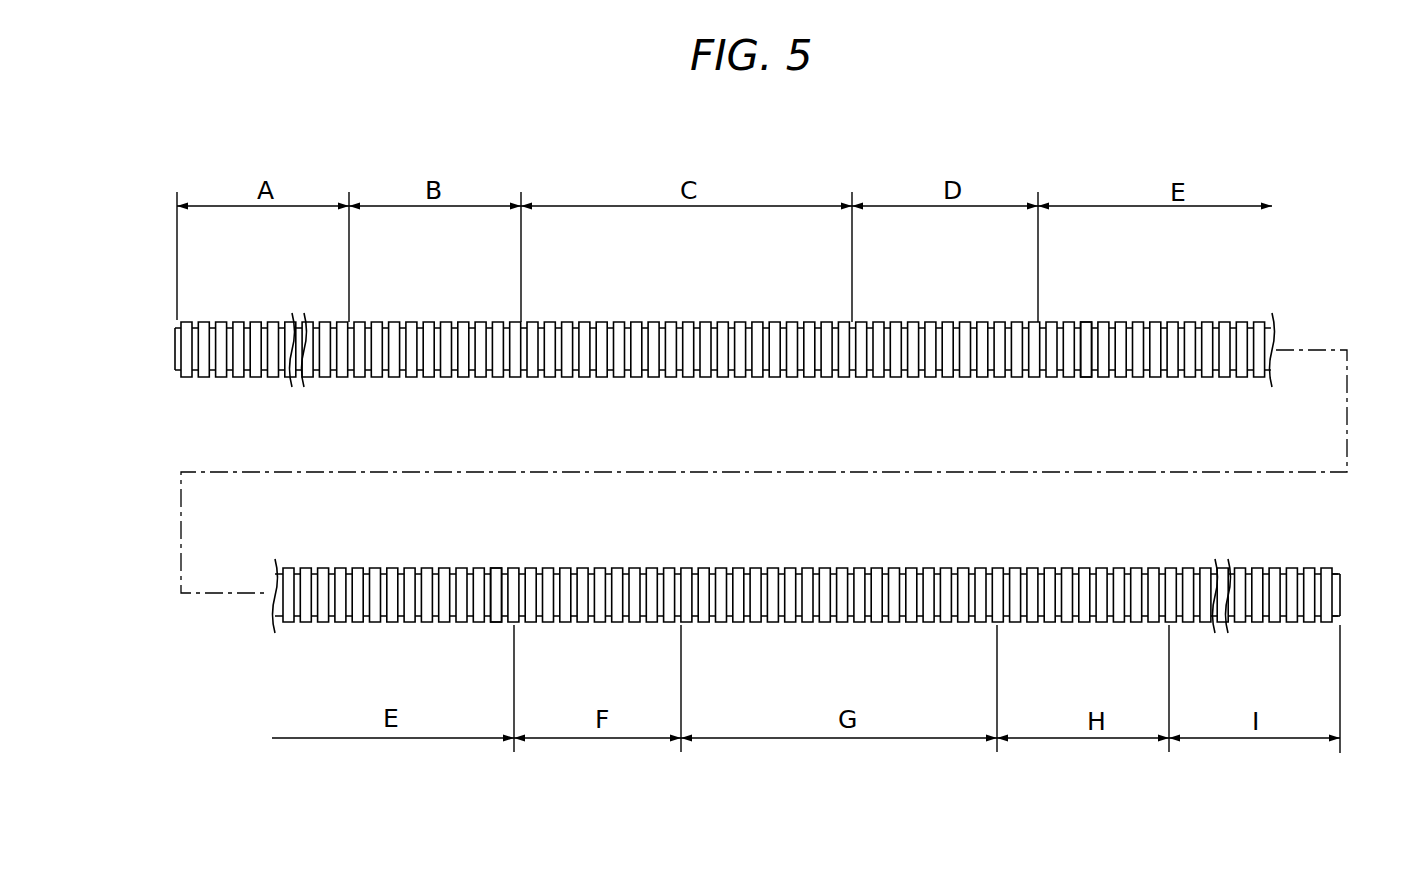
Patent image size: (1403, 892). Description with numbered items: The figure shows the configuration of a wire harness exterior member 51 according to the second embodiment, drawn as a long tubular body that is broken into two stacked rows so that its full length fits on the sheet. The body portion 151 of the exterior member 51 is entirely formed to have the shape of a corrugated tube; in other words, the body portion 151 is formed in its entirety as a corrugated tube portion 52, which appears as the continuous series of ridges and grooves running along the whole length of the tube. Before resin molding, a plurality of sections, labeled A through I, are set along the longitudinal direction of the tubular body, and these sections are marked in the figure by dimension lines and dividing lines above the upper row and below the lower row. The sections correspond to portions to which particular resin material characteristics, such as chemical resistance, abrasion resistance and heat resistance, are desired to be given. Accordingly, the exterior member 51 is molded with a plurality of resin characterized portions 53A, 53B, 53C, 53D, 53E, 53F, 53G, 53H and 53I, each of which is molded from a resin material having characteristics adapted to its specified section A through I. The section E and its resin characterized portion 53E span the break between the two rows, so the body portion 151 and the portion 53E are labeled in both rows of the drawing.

The exterior member 51 is at (1293, 298).
The corrugated tube portion 52 is at (676, 378).
The resin characterized portion 53A is at (277, 320).
The resin characterized portion 53B is at (447, 320).
The resin characterized portion 53C is at (705, 320).
The resin characterized portion 53D is at (963, 320).
The resin characterized portion 53E is at (1228, 320).
The resin characterized portion 53F is at (565, 624).
The resin characterized portion 53G is at (810, 625).
The resin characterized portion 53H is at (1052, 625).
The resin characterized portion 53I is at (1275, 625).
The body portion 151 is at (1086, 320).